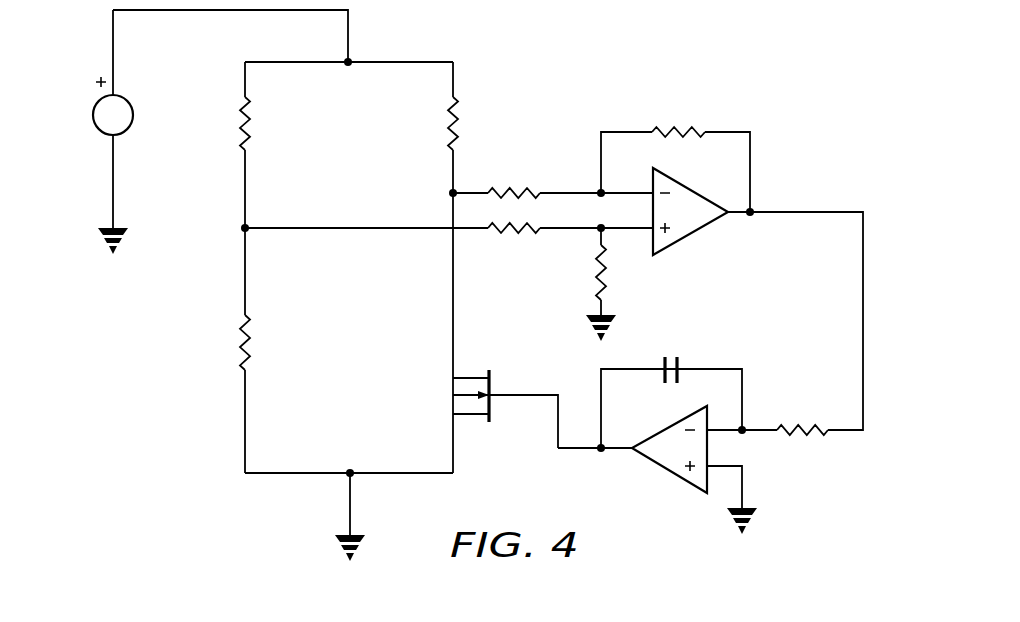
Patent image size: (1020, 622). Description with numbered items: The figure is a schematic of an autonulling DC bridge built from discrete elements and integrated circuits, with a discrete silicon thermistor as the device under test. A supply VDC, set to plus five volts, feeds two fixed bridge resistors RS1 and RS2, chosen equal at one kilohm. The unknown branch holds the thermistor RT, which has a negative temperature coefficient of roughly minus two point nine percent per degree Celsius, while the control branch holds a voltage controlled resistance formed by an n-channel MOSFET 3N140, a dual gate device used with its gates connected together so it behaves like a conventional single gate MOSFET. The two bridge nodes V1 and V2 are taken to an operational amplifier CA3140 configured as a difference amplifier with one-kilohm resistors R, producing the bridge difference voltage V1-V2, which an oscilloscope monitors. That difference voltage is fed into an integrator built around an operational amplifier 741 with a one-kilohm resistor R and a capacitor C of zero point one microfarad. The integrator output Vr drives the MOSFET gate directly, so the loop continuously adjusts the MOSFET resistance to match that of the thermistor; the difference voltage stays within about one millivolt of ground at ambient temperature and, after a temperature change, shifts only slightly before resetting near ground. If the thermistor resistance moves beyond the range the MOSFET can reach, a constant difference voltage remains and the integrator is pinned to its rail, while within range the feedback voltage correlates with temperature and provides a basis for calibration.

The DC supply voltage VDC is at (90, 106).
The bridge resistor RS1 is at (240, 123).
The bridge resistor RS2 is at (458, 128).
The thermistor RT is at (238, 338).
The bridge node voltage V1 is at (230, 230).
The bridge node voltage V2 is at (438, 194).
The resistor R is at (535, 192).
The difference amplifier operational amplifier CA3140 is at (718, 215).
The difference voltage V1-V2 is at (803, 192).
The MOSFET 3N140 is at (468, 409).
The feedback voltage Vr is at (522, 373).
The integrator capacitor C is at (678, 366).
The integrator operational amplifier 741 is at (652, 456).